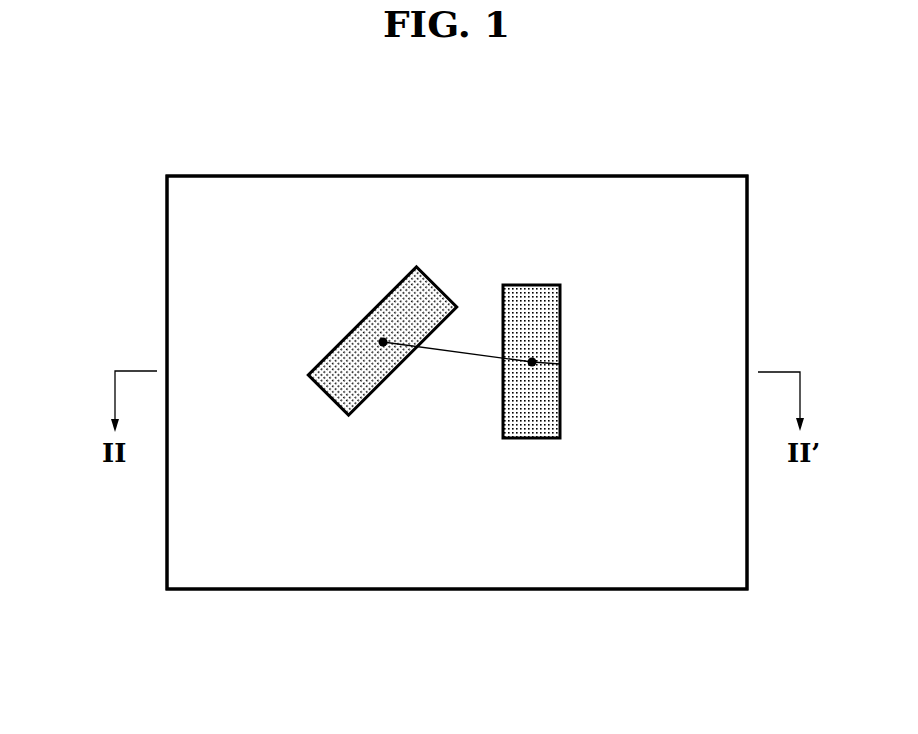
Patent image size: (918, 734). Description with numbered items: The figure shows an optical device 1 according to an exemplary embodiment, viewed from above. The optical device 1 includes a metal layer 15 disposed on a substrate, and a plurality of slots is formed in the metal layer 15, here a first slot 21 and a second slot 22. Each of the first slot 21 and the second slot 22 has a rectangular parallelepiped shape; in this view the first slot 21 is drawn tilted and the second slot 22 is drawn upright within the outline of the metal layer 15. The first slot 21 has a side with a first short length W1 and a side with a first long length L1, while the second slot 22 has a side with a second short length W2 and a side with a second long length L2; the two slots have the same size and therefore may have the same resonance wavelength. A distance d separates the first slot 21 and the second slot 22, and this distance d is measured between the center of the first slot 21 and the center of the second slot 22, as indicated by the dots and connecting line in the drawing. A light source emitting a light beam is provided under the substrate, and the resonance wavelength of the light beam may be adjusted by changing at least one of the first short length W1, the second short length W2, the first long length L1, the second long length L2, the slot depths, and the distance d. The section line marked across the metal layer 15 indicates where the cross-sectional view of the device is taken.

The optical device 1 is at (137, 161).
The metal layer 15 is at (722, 558).
The first slot 21 is at (423, 300).
The second slot 22 is at (530, 298).
The distance d is at (471, 361).
The first long length L1 is at (357, 323).
The first short length W1 is at (327, 393).
The second long length L2 is at (560, 364).
The second short length W2 is at (530, 438).